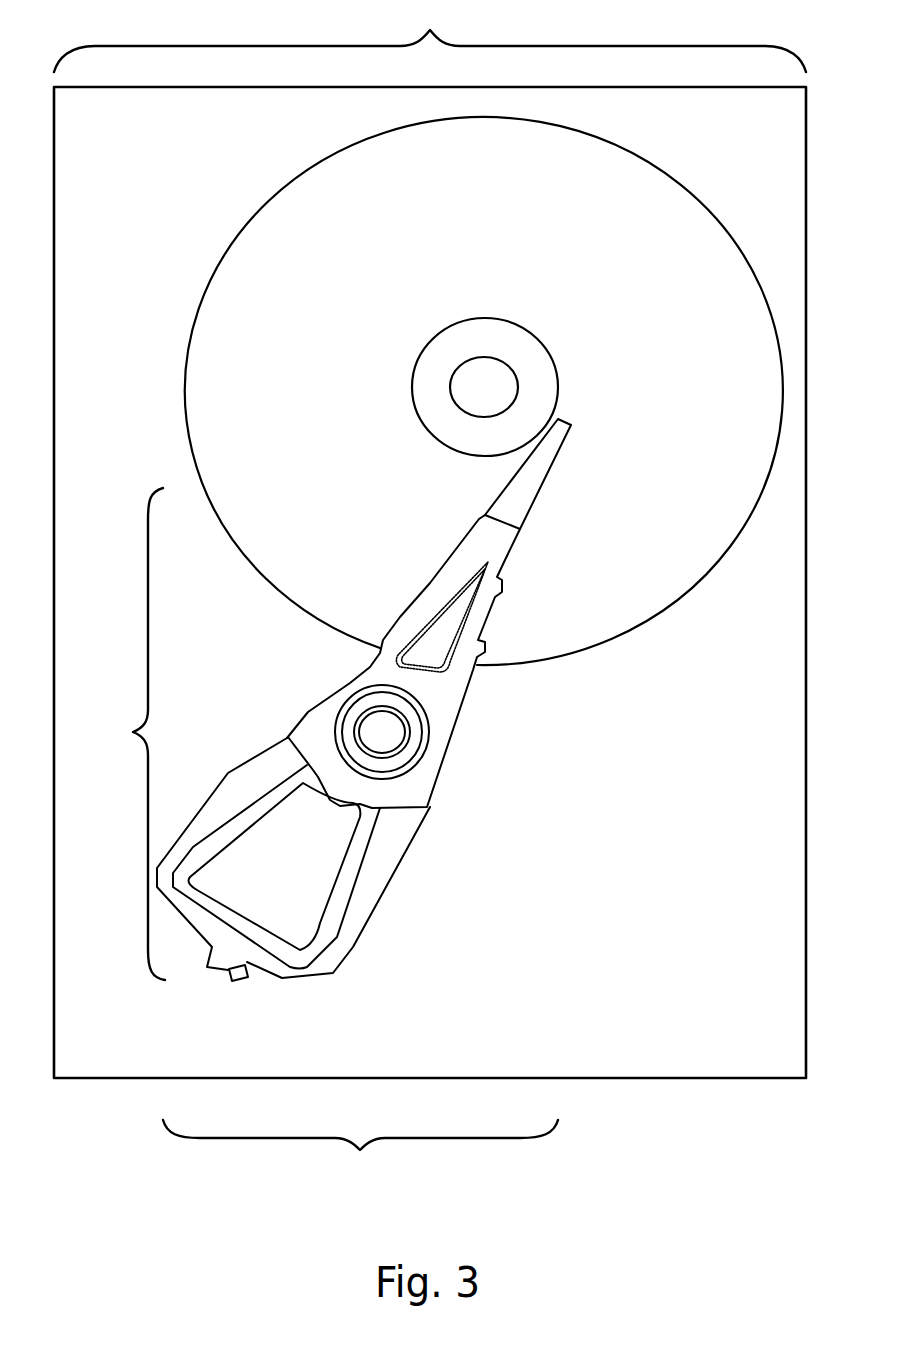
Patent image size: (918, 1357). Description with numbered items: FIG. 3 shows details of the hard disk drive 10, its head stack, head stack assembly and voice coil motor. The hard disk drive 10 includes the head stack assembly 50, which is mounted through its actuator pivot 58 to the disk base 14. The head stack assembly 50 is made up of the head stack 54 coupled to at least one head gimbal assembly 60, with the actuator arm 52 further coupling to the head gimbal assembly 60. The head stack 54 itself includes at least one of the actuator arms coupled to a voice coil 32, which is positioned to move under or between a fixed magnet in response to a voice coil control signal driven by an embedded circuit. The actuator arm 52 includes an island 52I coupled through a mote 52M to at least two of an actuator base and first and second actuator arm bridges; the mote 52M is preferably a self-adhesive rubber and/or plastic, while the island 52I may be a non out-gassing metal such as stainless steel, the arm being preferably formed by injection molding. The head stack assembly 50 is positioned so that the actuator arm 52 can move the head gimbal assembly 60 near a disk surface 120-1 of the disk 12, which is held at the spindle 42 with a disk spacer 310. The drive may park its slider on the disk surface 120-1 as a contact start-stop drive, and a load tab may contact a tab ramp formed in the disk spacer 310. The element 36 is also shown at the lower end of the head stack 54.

The hard disk drive 10 is at (430, 36).
The disk base 14 is at (795, 115).
The magnetic disk 12 is at (484, 391).
The disk surface 120-1 is at (778, 353).
The disk spacer 310 is at (420, 417).
The spindle 42 is at (484, 387).
The head gimbal assembly 60 is at (545, 475).
The actuator arm 52 is at (467, 548).
The mote 52M is at (437, 610).
The island 52I is at (450, 622).
The actuator pivot 58 is at (382, 732).
The voice coil 32 is at (227, 866).
The tab / stop 36 is at (236, 983).
The head stack 54 is at (126, 734).
The head stack assembly 50 is at (360, 1158).